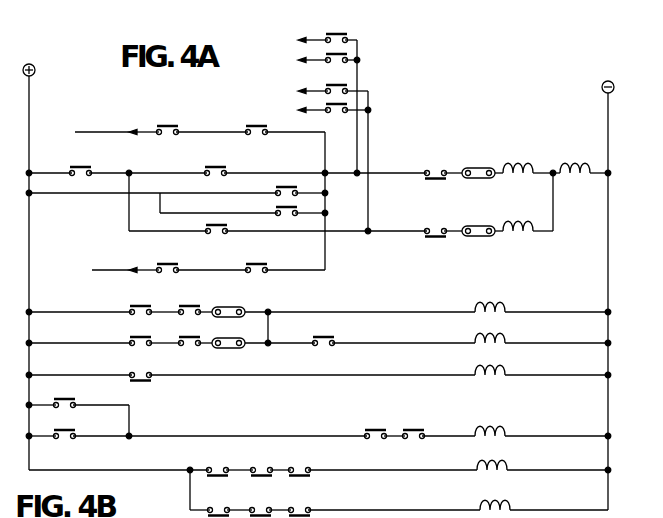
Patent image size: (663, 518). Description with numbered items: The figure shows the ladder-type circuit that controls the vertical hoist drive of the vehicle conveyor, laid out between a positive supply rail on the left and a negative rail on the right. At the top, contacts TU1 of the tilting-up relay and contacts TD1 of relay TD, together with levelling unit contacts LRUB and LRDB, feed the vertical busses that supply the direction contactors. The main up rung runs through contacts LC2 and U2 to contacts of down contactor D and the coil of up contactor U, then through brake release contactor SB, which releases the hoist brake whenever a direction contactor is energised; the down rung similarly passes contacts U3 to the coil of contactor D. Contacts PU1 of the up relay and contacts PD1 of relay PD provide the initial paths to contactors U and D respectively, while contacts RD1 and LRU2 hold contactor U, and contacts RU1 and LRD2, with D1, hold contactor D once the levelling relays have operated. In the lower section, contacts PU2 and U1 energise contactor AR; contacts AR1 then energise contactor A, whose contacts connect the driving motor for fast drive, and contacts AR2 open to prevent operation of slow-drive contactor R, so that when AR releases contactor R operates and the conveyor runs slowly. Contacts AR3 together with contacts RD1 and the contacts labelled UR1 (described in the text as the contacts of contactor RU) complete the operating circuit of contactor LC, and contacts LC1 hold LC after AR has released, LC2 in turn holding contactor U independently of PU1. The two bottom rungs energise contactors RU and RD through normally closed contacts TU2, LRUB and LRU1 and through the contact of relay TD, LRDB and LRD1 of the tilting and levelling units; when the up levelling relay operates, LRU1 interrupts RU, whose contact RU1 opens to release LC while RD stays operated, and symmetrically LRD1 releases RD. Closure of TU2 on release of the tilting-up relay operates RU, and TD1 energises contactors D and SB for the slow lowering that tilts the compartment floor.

The tilting-up relay contacts TU1 is at (328, 26).
The levelling unit contacts LRUB is at (266, 466).
The tilting-down relay contacts TD1 is at (354, 81).
The levelling unit contacts LRDB is at (258, 507).
The contactor RD contacts RD1 is at (256, 270).
The up levelling relay contacts LRU2 is at (263, 118).
The contactor LC holding contacts LC2 is at (81, 160).
The contactor U holding contacts U2 is at (220, 160).
The up relay contacts PU1 is at (289, 183).
The contactor RU contacts RU1 is at (135, 258).
The contactor D holding contacts D1 is at (219, 237).
The down levelling relay contacts LRD2 is at (278, 258).
The down relay contacts PD1 is at (292, 217).
The down contactor D is at (356, 243).
The up contactor U is at (518, 157).
The brake release contactor SB is at (574, 157).
The contactor U contacts U3 is at (439, 218).
The up relay contacts PU2 is at (140, 299).
The contactor U contacts U1 is at (190, 299).
The down relay PD is at (138, 330).
The contactor AR contacts AR2 is at (144, 365).
The contactor AR contacts AR1 is at (329, 330).
The fast-drive auxiliary contactor AR is at (486, 295).
The fast-drive contactor A is at (498, 327).
The slow-drive contactor R is at (499, 359).
The contactor AR contacts AR3 is at (70, 393).
The contactor LC holding contacts LC1 is at (62, 425).
The up relay contact UR1 is at (366, 423).
The levelling control contactor LC is at (490, 422).
The tilting-up relay contacts TU2 is at (218, 465).
The up levelling relay contacts LRU1 is at (300, 466).
The up levelling contactor RU is at (509, 456).
The tilting-down relay TD is at (219, 497).
The down levelling relay contacts LRD1 is at (300, 506).
The down levelling contactor RD is at (512, 497).